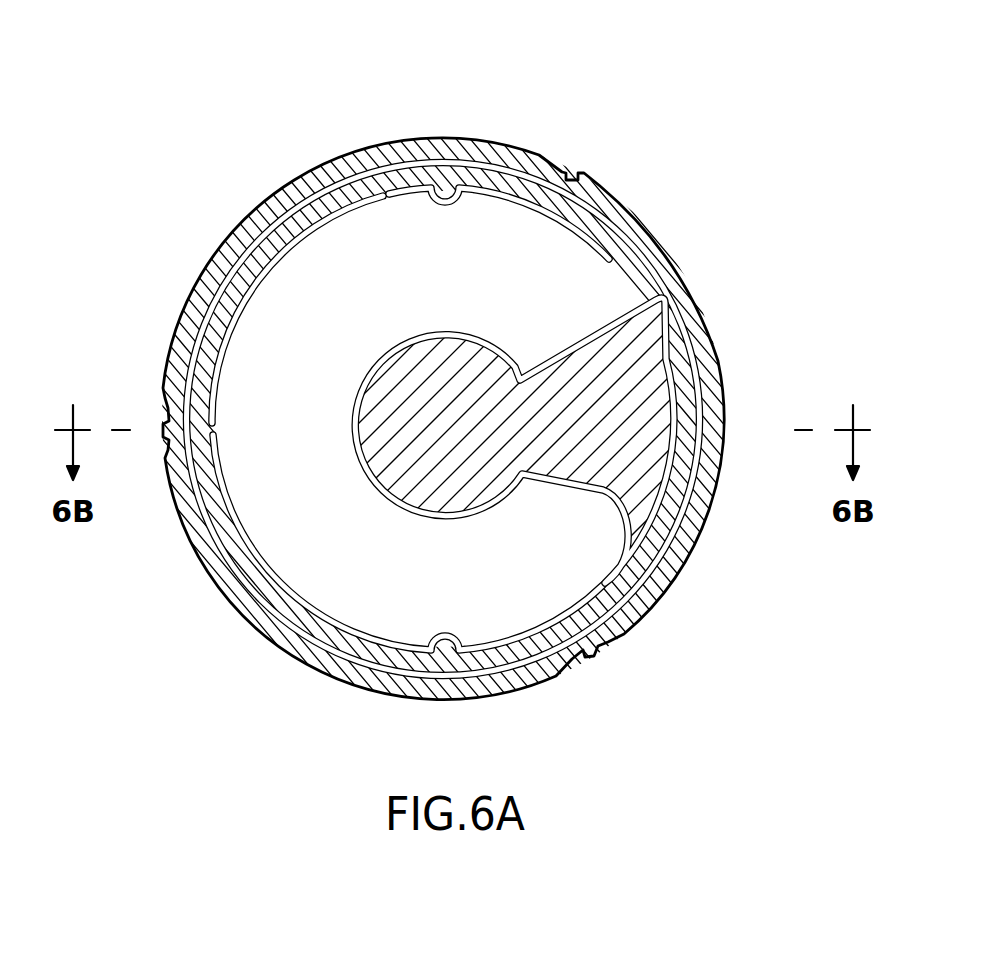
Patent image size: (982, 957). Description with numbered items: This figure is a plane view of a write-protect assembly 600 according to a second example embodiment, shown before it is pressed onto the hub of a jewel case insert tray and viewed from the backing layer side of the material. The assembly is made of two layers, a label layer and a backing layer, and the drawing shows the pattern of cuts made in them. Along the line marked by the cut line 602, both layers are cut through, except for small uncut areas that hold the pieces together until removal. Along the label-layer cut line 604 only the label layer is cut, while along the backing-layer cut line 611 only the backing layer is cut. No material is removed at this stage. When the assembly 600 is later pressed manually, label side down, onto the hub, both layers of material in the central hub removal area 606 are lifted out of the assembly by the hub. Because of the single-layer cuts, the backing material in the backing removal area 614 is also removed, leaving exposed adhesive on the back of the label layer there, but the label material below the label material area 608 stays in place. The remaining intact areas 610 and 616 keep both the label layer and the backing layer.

The write-protect assembly 600 is at (445, 419).
The cut line through both layers 602 is at (514, 481).
The label-layer cut line 604 is at (514, 483).
The hub removal area 606 is at (388, 467).
The label material area 608 is at (413, 146).
The intact area 610 is at (500, 607).
The backing-layer cut line 611 is at (280, 208).
The backing removal area 614 is at (240, 275).
The intact area 616 is at (250, 227).